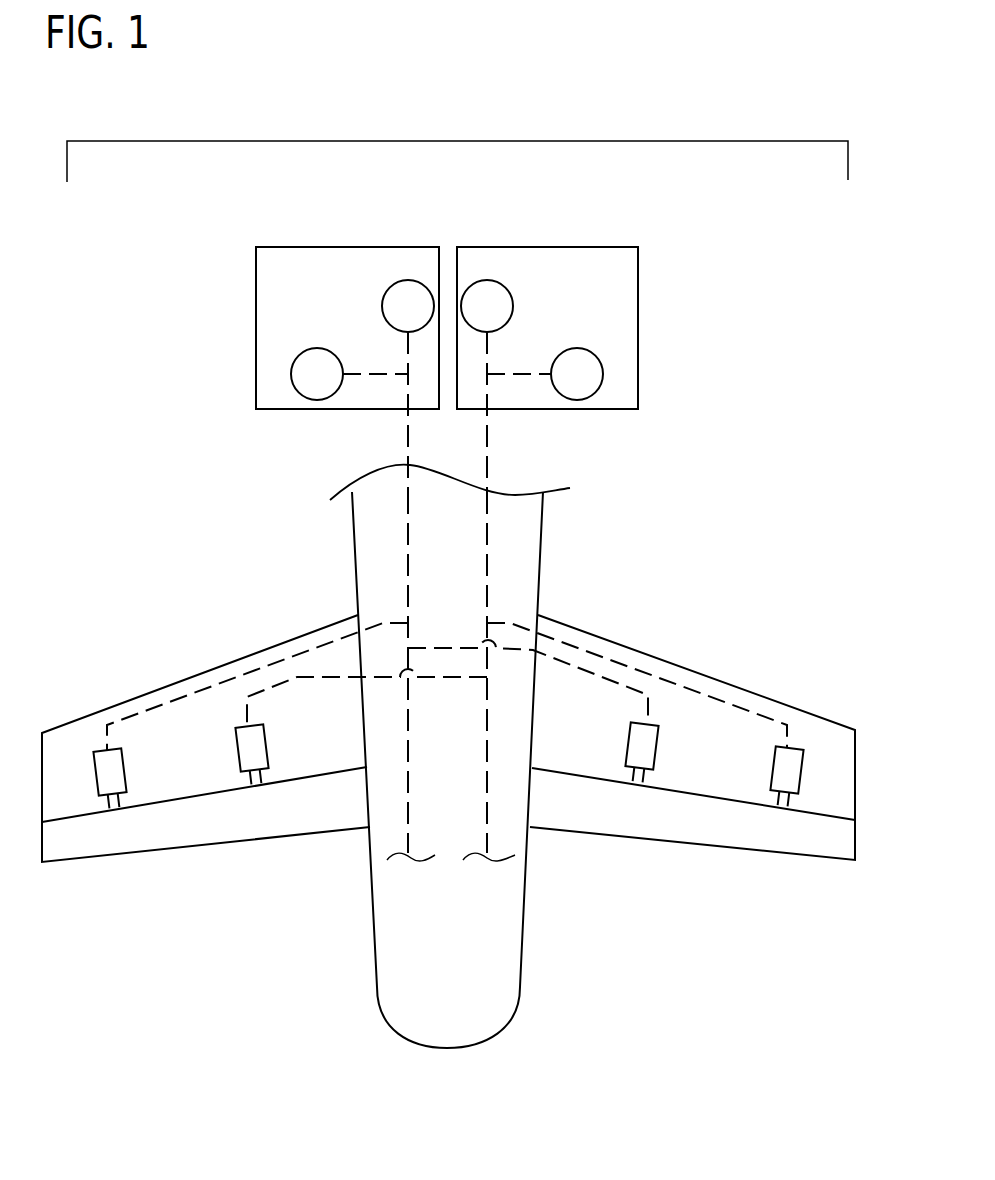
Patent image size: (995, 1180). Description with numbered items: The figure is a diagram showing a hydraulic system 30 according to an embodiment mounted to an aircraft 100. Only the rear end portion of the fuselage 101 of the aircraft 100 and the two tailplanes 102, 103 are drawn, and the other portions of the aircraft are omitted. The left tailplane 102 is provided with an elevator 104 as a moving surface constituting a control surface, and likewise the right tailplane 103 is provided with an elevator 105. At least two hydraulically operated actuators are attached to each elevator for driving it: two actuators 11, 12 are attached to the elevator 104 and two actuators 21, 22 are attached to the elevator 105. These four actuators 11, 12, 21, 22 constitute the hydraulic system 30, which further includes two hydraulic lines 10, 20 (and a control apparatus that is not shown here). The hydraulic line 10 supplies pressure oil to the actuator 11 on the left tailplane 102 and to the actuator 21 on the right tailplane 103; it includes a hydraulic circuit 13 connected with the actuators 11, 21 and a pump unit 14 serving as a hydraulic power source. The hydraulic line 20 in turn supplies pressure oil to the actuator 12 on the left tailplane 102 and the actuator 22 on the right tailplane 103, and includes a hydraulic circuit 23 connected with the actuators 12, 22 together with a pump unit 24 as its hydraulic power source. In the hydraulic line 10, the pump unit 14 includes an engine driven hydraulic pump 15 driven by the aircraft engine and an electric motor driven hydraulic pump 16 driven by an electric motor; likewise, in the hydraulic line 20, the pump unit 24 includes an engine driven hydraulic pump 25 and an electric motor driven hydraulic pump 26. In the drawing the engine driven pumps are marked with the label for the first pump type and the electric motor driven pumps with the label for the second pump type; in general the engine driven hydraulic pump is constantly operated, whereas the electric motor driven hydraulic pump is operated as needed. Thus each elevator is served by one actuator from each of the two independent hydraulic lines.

The hydraulic system 30 is at (445, 141).
The pump unit 14 is at (256, 317).
The engine driven hydraulic pump 15 is at (412, 280).
The electric motor driven hydraulic pump 16 is at (293, 366).
The pump unit 24 is at (640, 312).
The engine driven hydraulic pump 25 is at (497, 282).
The electric motor driven hydraulic pump 26 is at (603, 374).
The hydraulic line 10 is at (398, 458).
The hydraulic line 20 is at (497, 462).
The hydraulic circuit 13 is at (408, 565).
The hydraulic circuit 23 is at (488, 583).
The actuator 11 is at (125, 780).
The actuator 12 is at (268, 758).
The actuator 21 is at (655, 760).
The actuator 22 is at (802, 783).
The aircraft 100 is at (660, 589).
The fuselage 101 is at (357, 590).
The tailplane 102 is at (177, 682).
The tailplane 103 is at (722, 677).
The elevator 104 is at (57, 852).
The elevator 105 is at (572, 820).